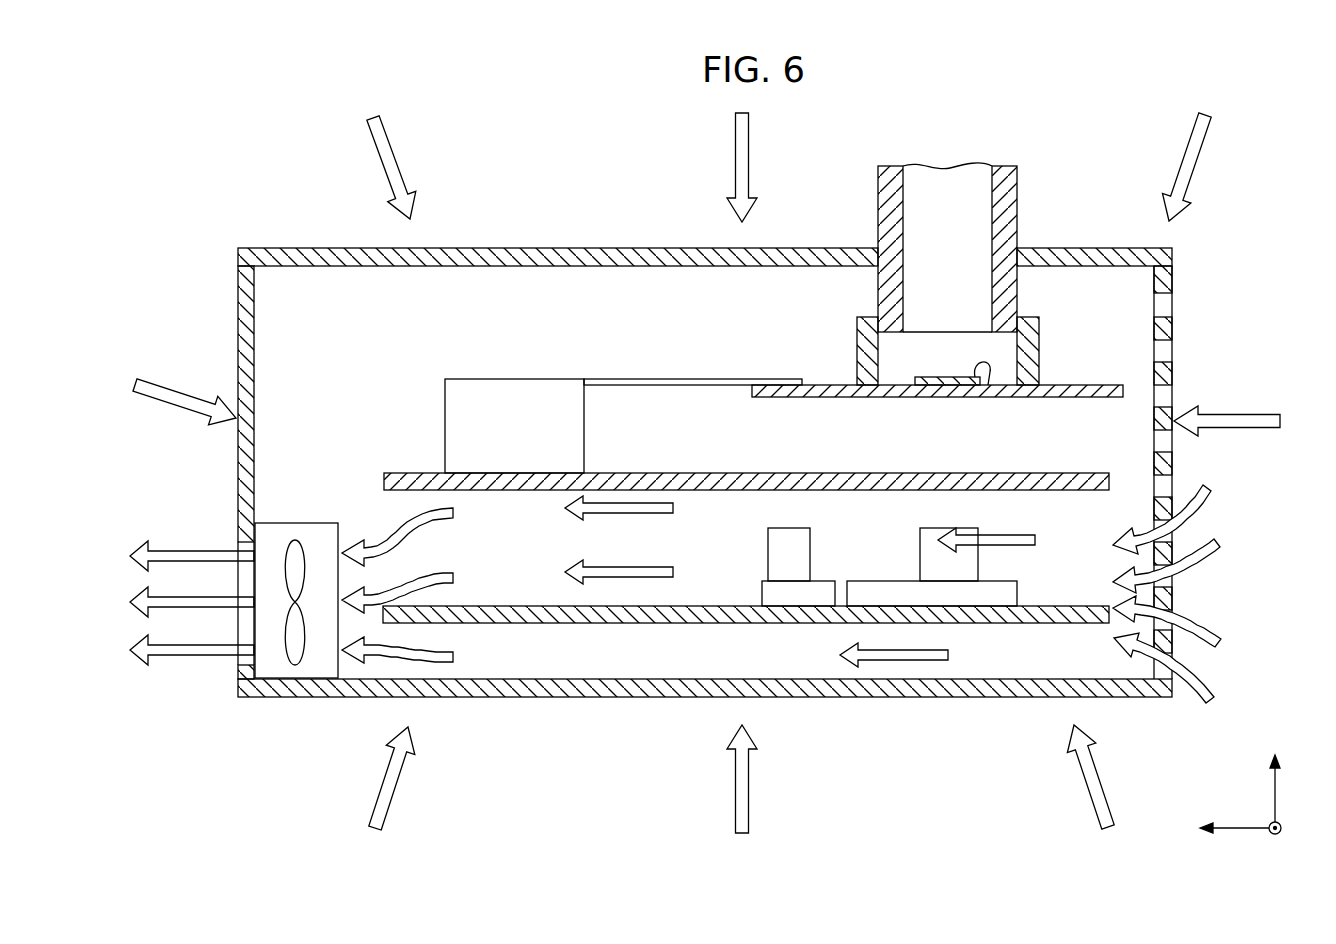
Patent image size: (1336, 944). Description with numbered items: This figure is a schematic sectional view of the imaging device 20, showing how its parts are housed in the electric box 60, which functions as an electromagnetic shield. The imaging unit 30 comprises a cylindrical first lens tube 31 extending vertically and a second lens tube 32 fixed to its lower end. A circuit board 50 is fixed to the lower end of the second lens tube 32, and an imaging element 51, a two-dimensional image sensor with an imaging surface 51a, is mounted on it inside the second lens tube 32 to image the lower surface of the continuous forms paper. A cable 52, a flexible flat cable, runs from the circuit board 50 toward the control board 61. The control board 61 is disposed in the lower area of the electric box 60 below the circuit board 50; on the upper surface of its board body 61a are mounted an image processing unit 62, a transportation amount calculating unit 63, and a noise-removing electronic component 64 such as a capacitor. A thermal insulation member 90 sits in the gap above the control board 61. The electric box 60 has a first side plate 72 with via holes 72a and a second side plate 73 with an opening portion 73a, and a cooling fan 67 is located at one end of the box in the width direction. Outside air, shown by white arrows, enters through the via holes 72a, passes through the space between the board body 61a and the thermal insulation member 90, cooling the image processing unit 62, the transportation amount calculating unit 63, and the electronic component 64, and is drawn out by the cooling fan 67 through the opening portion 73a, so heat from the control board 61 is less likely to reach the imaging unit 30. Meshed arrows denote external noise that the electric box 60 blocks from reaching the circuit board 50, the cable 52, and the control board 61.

The imaging device 20 is at (215, 136).
The imaging unit 30 is at (1062, 165).
The first lens tube 31 is at (887, 205).
The second lens tube 32 is at (1038, 336).
The circuit board 50 is at (1100, 398).
The imaging element 51 is at (923, 384).
The imaging surface 51a is at (985, 386).
The cable 52 is at (673, 378).
The electric box 60 is at (270, 230).
The control board 61 is at (1024, 636).
The board body 61a is at (718, 623).
The image processing unit 62 is at (998, 580).
The transportation amount calculating unit 63 is at (820, 580).
The electronic component 64 is at (768, 546).
The cooling fan 67 is at (302, 522).
The first side plate 72 is at (1166, 330).
The via hole 72a is at (1172, 530).
The second side plate 73 is at (246, 302).
The opening portion 73a is at (246, 662).
The thermal insulation member 90 is at (718, 480).